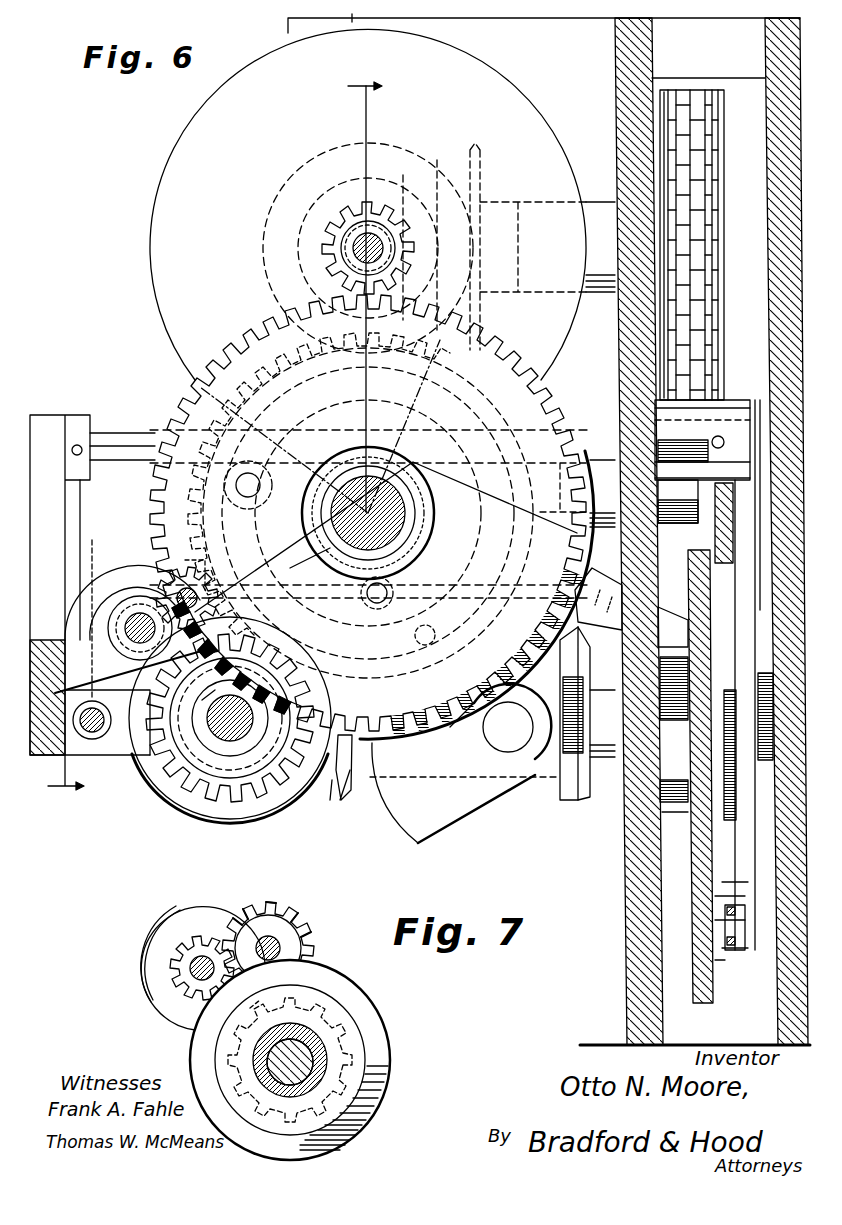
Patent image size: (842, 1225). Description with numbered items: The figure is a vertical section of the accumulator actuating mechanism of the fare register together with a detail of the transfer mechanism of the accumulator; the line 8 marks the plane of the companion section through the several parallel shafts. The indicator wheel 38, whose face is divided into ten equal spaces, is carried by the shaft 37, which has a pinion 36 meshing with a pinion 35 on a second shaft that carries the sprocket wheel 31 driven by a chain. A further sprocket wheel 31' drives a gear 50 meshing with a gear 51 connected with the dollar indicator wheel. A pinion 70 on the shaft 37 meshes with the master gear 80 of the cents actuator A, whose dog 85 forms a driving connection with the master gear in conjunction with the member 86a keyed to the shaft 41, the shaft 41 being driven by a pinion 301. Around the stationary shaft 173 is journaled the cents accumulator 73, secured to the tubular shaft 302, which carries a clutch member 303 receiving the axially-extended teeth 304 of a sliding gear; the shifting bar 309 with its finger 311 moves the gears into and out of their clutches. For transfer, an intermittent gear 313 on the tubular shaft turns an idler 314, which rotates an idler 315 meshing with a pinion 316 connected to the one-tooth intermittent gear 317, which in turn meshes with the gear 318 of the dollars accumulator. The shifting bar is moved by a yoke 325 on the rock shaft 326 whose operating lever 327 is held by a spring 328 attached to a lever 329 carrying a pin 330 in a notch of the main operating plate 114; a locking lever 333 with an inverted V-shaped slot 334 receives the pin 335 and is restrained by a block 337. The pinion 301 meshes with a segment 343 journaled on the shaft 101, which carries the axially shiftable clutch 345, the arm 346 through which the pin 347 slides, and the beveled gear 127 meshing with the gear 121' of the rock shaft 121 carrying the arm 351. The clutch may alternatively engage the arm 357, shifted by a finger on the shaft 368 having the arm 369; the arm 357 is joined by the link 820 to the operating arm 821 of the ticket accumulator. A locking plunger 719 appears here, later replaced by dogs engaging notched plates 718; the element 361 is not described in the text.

In FIG. 6, the section line 8 is at (215, 437).
In FIG. 6, the sprocket wheel 31 is at (704, 245).
In FIG. 6, the sprocket wheel 31' is at (678, 222).
In FIG. 6, the pinion 35 is at (418, 178).
In FIG. 6, the pinion 36 is at (322, 262).
In FIG. 6, the shaft 37 is at (355, 247).
In FIG. 6, the indicator wheel 38 is at (152, 258).
In FIG. 6, the shaft 41 is at (390, 516).
In FIG. 6, the gear 50 is at (482, 170).
In FIG. 6, the gear 51 is at (303, 168).
In FIG. 6, the pinion 70 is at (326, 251).
In FIG. 7, the cents accumulator 73 is at (385, 1012).
In FIG. 6, the master gear 80 is at (190, 393).
In FIG. 6, the dog 85 is at (350, 590).
In FIG. 6, the member 86a is at (329, 414).
In FIG. 6, the shaft 101 is at (508, 745).
In FIG. 6, the main operating plate 114 is at (745, 882).
In FIG. 6, the rock shaft 121 is at (744, 675).
In FIG. 6, the gear 121' is at (558, 740).
In FIG. 6, the beveled gear 127 is at (498, 810).
In FIG. 6, the stationary shaft 173 is at (227, 733).
In FIG. 7, the stationary shaft 173 is at (300, 1060).
In FIG. 6, the pinion 301 is at (478, 492).
In FIG. 7, the tubular shaft 302 is at (316, 1033).
In FIG. 6, the clutch member 303 is at (258, 790).
In FIG. 6, the axially-extended teeth 304 is at (228, 802).
In FIG. 6, the shifting bar 309 is at (95, 738).
In FIG. 7, the shifting bar 309 is at (190, 980).
In FIG. 6, the finger 311 is at (122, 693).
In FIG. 6, the intermittent gear 313 is at (330, 800).
In FIG. 7, the intermittent gear 313 is at (358, 1077).
In FIG. 6, the idler 314 is at (181, 559).
In FIG. 7, the idler 314 is at (302, 932).
In FIG. 7, the idler 315 is at (285, 908).
In FIG. 6, the pinion 316 is at (140, 560).
In FIG. 7, the pinion 316 is at (187, 950).
In FIG. 6, the one-tooth intermittent gear 317 is at (125, 578).
In FIG. 7, the one-tooth intermittent gear 317 is at (150, 976).
In FIG. 7, the gear 318 is at (340, 968).
In FIG. 6, the yoke 325 is at (82, 527).
In FIG. 6, the rock shaft 326 is at (112, 440).
In FIG. 6, the operating lever 327 is at (745, 896).
In FIG. 6, the spring 328 is at (695, 818).
In FIG. 6, the lever 329 is at (700, 850).
In FIG. 6, the pin 330 is at (700, 753).
In FIG. 6, the locking lever 333 is at (732, 955).
In FIG. 6, the inverted V-shaped slot 334 is at (725, 920).
In FIG. 6, the pin 335 is at (720, 960).
In FIG. 6, the block 337 is at (708, 1003).
In FIG. 6, the segment 343 is at (343, 800).
In FIG. 6, the clutch 345 is at (455, 827).
In FIG. 6, the arm 346 is at (405, 820).
In FIG. 6, the pin 347 is at (353, 767).
In FIG. 6, the arm 351 is at (742, 398).
In FIG. 6, the arm 357 is at (401, 516).
In FIG. 6, the bearing block 361 is at (540, 780).
In FIG. 6, the shaft 368 is at (603, 440).
In FIG. 6, the arm 369 is at (718, 520).
In FIG. 6, the notched plates 718 is at (487, 595).
In FIG. 6, the locking plunger 719 is at (598, 590).
In FIG. 6, the link 820 is at (294, 564).
In FIG. 6, the operating arm 821 is at (202, 700).
In FIG. 6, the cents actuator A is at (368, 477).